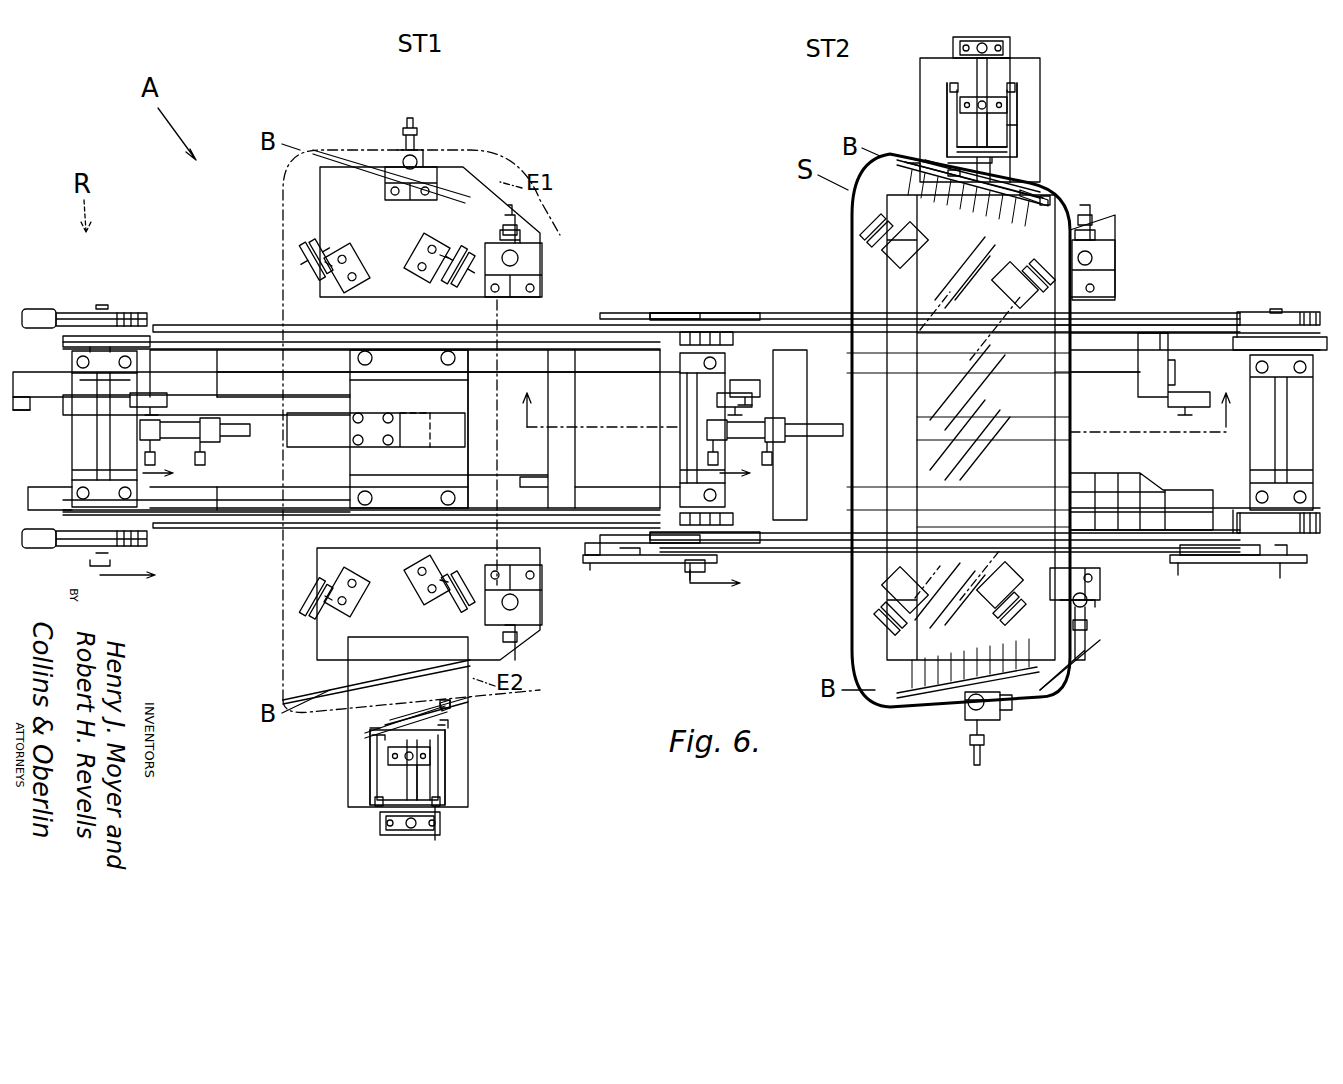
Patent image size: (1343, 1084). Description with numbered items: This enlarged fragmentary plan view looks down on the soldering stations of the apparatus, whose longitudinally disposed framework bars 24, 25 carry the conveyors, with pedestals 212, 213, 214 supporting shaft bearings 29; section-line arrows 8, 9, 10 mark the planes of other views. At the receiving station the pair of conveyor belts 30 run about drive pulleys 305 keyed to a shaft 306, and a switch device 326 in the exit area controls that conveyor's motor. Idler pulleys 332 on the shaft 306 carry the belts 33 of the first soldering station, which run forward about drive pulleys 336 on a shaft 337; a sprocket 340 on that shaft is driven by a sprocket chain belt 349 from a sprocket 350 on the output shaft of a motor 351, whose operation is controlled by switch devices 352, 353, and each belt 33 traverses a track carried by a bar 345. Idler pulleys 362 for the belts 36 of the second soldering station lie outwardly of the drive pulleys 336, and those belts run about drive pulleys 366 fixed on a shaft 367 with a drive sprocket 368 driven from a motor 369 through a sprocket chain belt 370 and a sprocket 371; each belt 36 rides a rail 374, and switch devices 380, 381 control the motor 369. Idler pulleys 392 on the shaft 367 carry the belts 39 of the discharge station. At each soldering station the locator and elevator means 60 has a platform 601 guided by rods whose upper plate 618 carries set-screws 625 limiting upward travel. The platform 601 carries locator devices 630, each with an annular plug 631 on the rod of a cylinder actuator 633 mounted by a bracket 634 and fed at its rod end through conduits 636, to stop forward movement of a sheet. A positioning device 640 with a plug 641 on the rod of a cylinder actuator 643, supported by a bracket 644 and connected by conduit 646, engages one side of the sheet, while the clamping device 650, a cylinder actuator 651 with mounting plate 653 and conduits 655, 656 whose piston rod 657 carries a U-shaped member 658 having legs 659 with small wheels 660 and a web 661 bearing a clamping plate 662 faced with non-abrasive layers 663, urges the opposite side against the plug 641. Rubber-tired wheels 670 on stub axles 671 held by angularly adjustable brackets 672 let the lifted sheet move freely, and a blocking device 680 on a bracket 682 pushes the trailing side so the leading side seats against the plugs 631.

The section line 8- 8 is at (522, 448).
The section line 9- 9 is at (164, 468).
The section line 10- 10 is at (728, 470).
The frame bar 24 is at (205, 500).
The frame bar 25 is at (258, 362).
The shaft bearings 29 is at (76, 362).
The conveyor belts 30 is at (38, 308).
The conveyor belts 33 is at (192, 325).
The conveyor belts 36 is at (760, 320).
The conveyor belts 39 is at (1290, 335).
The locator and elevator means 60 is at (335, 130).
The pedestal 212 is at (63, 451).
The pedestal 213 is at (671, 464).
The pedestal 214 is at (1243, 462).
The drive pulleys 305 is at (84, 312).
The shaft 306 is at (103, 305).
The switch device 326 is at (28, 410).
The idler pulley 332 is at (130, 312).
The drive pulleys 336 is at (655, 322).
The shaft 337 is at (680, 440).
The sprocket 340 is at (697, 575).
The bar 345 is at (300, 332).
The sprocket chain belt 349 is at (630, 563).
The sprocket 350 is at (585, 548).
The motor 351 is at (514, 487).
The switch device 352 is at (150, 397).
The switch device 353 is at (715, 398).
The idler pulleys 362 is at (705, 312).
The drive pulley 366 is at (1245, 312).
The shaft 367 is at (1276, 310).
The drive sprocket 368 is at (1280, 578).
The motor 369 is at (1112, 490).
The sprocket chain belt 370 is at (1210, 563).
The sprocket 371 is at (1178, 575).
The bar or rail 374 is at (800, 310).
The switch device 380 is at (745, 398).
The switch device 381 is at (1175, 400).
The idler pulleys 392 is at (1240, 350).
The platform 601 is at (318, 215).
The plate 618 is at (405, 360).
The set-screws 625 is at (365, 366).
The locator devices 630 is at (553, 259).
The annular plugs 631 is at (518, 258).
The cylinder actuator 633 is at (520, 243).
The bracket 634 is at (545, 278).
The conduits 636 is at (517, 222).
The positioning device 640 is at (386, 145).
The annular plug 641 is at (420, 165).
The cylinder actuator 643 is at (418, 160).
The bracket 644 is at (472, 180).
The conduit 646 is at (408, 125).
The clamping device 650 is at (937, 91).
The cylinder actuator 651 is at (980, 55).
The mounting plate 653 is at (1005, 72).
The conduit 655 is at (987, 45).
The conduit 656 is at (1007, 108).
The piston rod 657 is at (1020, 157).
The U-shaped member 658 is at (1028, 141).
The legs 659 is at (948, 105).
The small wheels 660 is at (952, 84).
The web 661 is at (965, 150).
The clamping plate 662 is at (990, 190).
The layers of non-abrasive material 663 is at (918, 172).
The wheels 670 is at (305, 262).
The stub axles 671 is at (425, 252).
The brackets 672 is at (347, 250).
The blocking device 680 is at (220, 457).
The bracket 682 is at (305, 447).